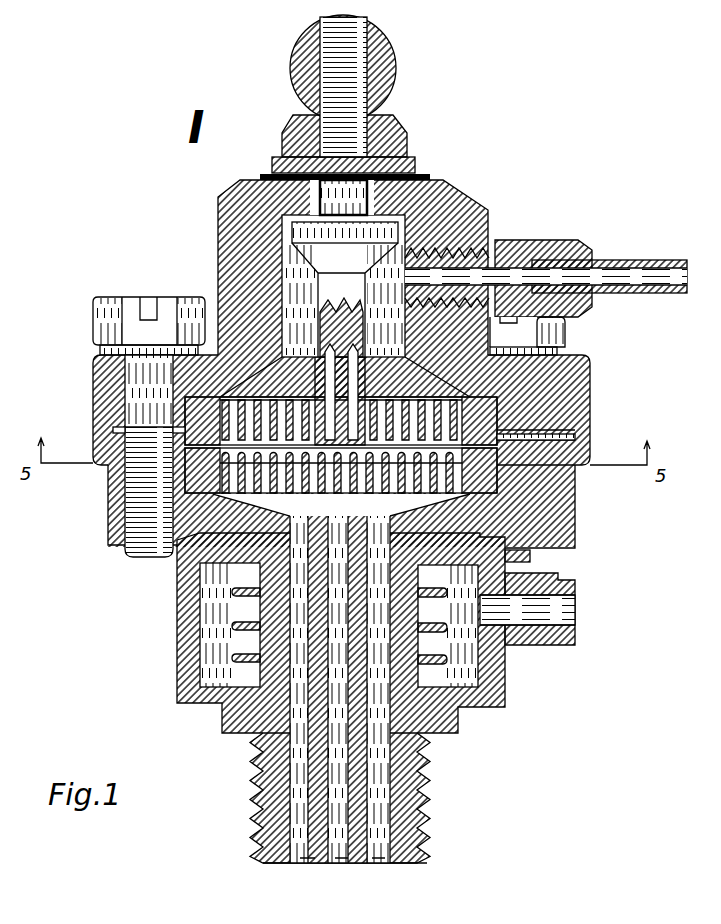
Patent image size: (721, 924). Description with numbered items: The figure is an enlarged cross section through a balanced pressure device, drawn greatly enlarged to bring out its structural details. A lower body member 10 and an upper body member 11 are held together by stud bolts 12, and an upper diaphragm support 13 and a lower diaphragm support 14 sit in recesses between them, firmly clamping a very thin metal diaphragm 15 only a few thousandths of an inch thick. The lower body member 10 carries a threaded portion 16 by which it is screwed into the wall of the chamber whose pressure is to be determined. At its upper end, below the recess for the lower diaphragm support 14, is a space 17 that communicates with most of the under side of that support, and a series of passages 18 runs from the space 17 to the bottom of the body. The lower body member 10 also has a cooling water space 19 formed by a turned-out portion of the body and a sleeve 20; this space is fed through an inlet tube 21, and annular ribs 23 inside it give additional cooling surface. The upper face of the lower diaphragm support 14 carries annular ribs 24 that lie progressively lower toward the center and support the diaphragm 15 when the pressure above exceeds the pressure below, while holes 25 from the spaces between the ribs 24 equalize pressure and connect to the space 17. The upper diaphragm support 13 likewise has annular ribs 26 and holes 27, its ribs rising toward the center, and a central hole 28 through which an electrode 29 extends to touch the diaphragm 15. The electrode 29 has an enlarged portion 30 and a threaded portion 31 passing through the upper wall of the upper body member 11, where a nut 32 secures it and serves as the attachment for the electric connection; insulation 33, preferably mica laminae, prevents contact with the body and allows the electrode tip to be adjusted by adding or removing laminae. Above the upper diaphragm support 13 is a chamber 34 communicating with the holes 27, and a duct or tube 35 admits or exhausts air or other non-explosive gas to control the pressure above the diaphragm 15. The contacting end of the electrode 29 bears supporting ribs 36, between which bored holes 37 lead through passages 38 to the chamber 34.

The lower body member 10 is at (550, 527).
The upper body member 11 is at (570, 372).
The stud bolts 12 is at (557, 332).
The upper diaphragm support 13 is at (493, 425).
The lower diaphragm support 14 is at (487, 478).
The diaphragm 15 is at (480, 453).
The threaded portion 16 is at (427, 788).
The space 17 is at (341, 678).
The passages 18 is at (380, 847).
The cooling water space 19 is at (453, 675).
The sleeve 20 is at (492, 693).
The inlet tube 21 is at (553, 610).
The annular ribs 23 is at (445, 658).
The annular ribs 24 is at (243, 452).
The holes 25 is at (245, 505).
The annular ribs 26 is at (222, 395).
The holes 27 is at (255, 390).
The hole 28 is at (317, 393).
The electrode 29 is at (353, 327).
The enlarged portion 30 is at (458, 199).
The threaded portion 31 is at (358, 124).
The nut 32 is at (385, 50).
The insulation 33 is at (387, 178).
The chamber 34 is at (392, 262).
The duct or tube 35 is at (570, 250).
The supporting ribs 36 is at (490, 428).
The bored holes 37 is at (325, 368).
The passages 38 is at (357, 368).